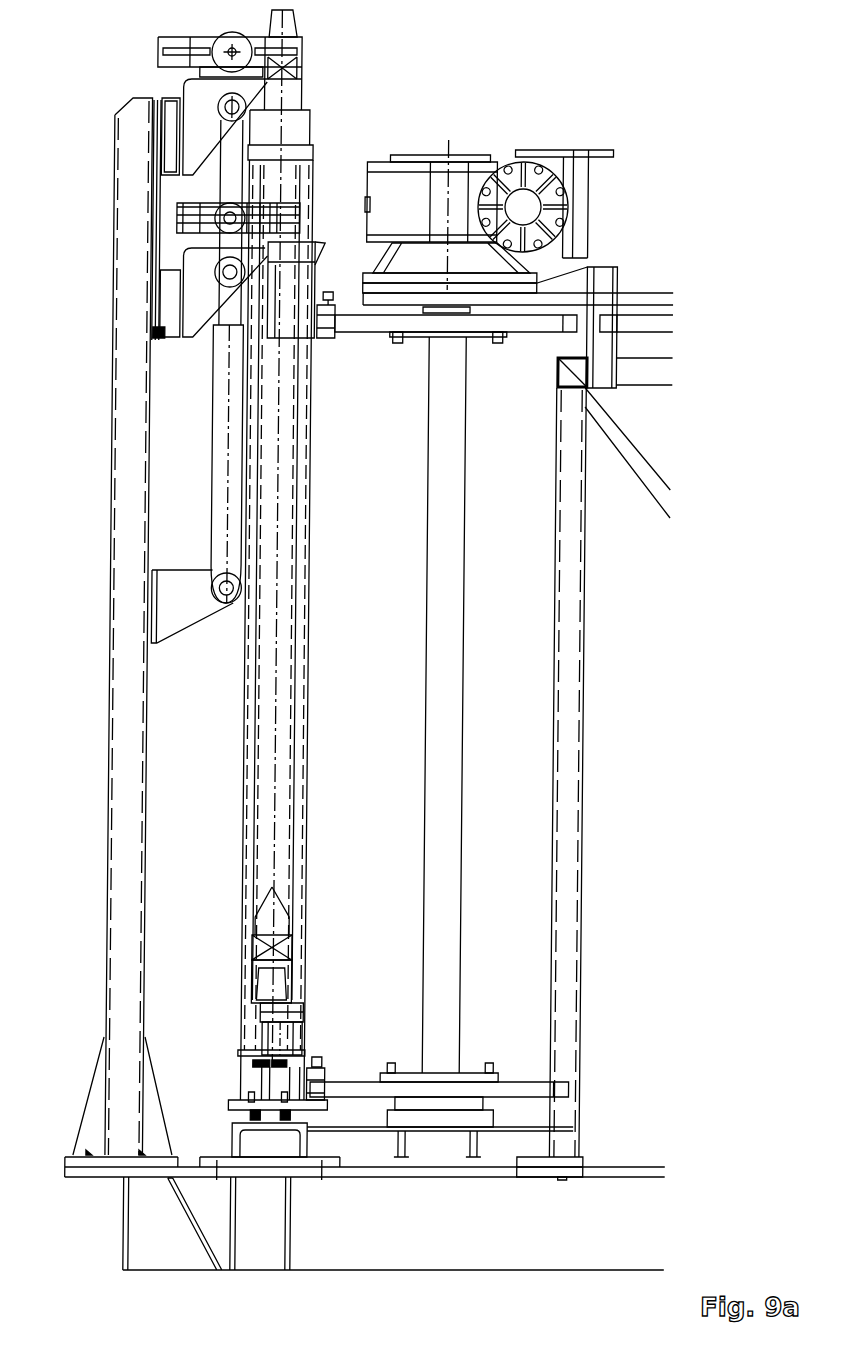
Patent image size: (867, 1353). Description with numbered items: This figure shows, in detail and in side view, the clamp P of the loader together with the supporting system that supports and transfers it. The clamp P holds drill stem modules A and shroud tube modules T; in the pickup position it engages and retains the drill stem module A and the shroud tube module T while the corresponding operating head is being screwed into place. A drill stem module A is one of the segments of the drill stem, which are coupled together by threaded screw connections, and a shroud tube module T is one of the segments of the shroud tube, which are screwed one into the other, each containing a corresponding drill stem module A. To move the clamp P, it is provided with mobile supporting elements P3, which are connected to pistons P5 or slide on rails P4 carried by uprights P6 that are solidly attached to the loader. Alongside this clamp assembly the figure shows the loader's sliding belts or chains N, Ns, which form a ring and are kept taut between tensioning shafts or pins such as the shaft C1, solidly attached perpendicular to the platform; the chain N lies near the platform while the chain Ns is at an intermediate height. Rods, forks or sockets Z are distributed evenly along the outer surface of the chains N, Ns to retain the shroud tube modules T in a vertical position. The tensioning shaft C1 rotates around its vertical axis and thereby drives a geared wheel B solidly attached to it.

The clamp P is at (180, 43).
The mobile supporting elements P3 is at (201, 98).
The rails P4 is at (155, 308).
The pistons P5 is at (224, 444).
The uprights P6 is at (131, 647).
The drill stem module A is at (292, 25).
The shroud tube module T is at (315, 164).
The rods, forks or sockets Z is at (296, 327).
The sliding belt or chain Ns is at (330, 320).
The geared wheel B is at (541, 325).
The tensioning shaft or pin C1 is at (459, 726).
The sliding belt or chain N is at (328, 1085).